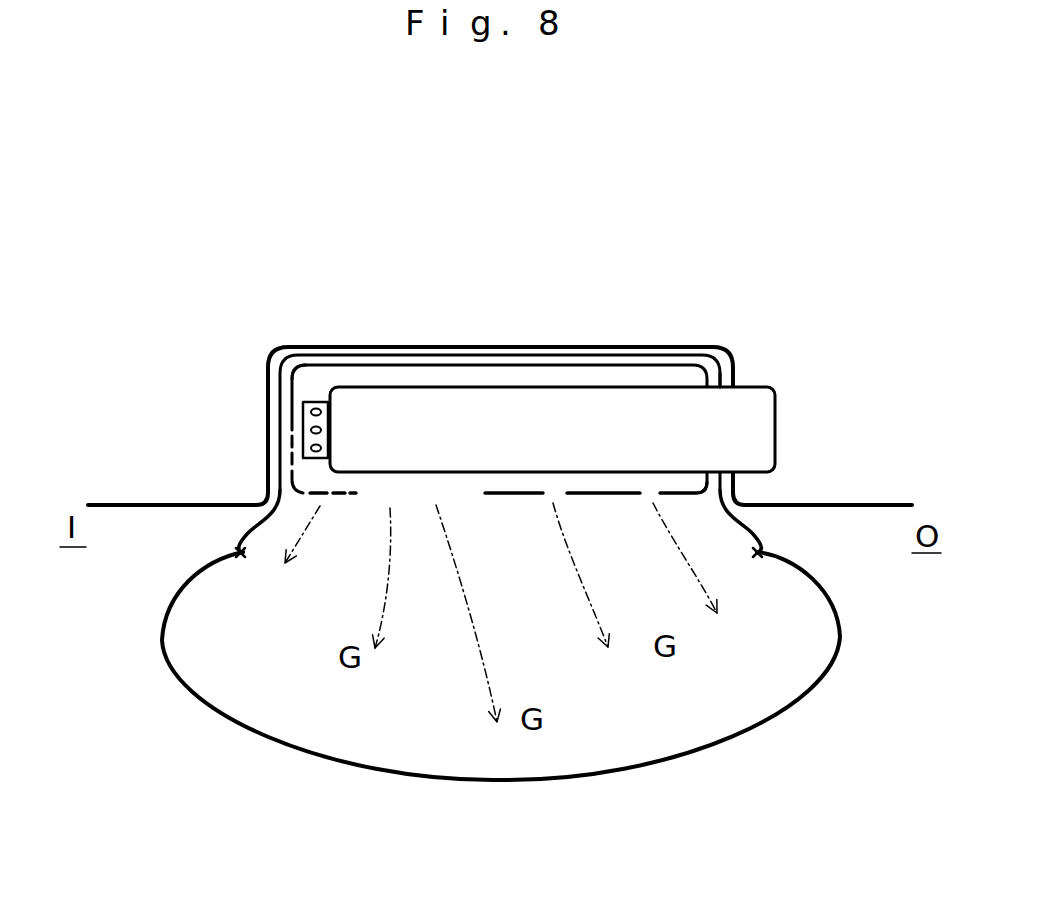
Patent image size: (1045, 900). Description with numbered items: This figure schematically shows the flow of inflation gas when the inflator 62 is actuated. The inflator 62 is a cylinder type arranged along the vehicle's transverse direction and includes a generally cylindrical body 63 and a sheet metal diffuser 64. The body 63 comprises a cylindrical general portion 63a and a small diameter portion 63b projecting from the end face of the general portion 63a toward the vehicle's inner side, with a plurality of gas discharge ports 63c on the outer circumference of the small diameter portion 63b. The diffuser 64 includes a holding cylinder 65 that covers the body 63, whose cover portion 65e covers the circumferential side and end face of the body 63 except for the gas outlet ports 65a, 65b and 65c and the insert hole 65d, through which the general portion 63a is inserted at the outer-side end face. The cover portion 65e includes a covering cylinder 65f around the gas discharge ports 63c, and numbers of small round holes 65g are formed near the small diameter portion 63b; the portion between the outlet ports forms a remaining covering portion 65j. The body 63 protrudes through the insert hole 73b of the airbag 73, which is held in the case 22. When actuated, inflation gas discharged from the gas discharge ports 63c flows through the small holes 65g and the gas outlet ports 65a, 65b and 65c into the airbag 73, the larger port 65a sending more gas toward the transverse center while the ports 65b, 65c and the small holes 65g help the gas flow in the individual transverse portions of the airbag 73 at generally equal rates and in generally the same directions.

The case 22 is at (622, 346).
The inflator 62 is at (888, 268).
The body 63 is at (778, 427).
The general portion 63a is at (748, 450).
The small diameter portion 63b is at (329, 428).
The gas discharge ports 63c is at (317, 406).
The diffuser 64 is at (710, 366).
The holding cylinder 65 is at (513, 353).
The gas outlet port 65a is at (458, 495).
The gas outlet port 65b is at (302, 410).
The gas outlet port 65c is at (645, 497).
The insert hole 65d is at (710, 472).
The cover portion 65e is at (288, 378).
The covering cylinder 65f is at (303, 400).
The small holes 65g is at (327, 497).
The remaining covering portion 65j is at (510, 497).
The airbag 73 is at (183, 723).
The insert hole 73b is at (722, 385).